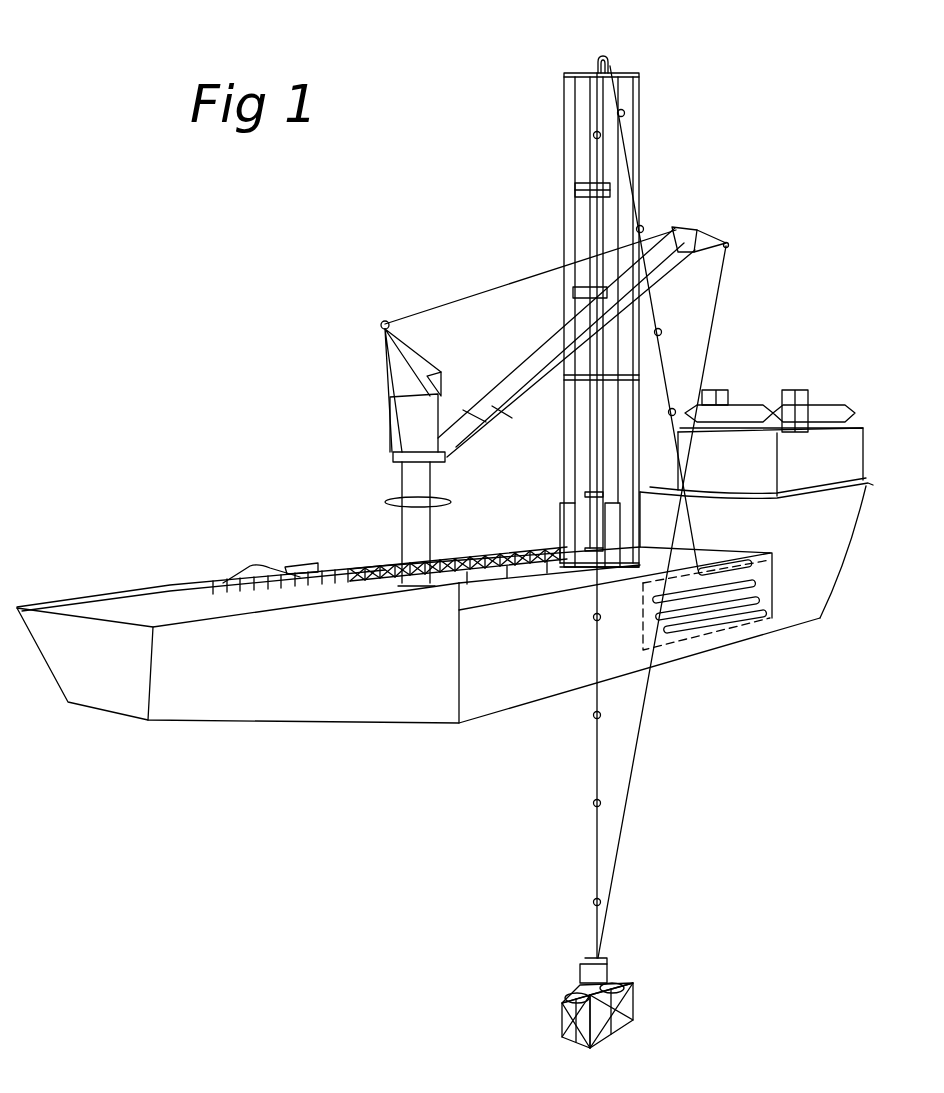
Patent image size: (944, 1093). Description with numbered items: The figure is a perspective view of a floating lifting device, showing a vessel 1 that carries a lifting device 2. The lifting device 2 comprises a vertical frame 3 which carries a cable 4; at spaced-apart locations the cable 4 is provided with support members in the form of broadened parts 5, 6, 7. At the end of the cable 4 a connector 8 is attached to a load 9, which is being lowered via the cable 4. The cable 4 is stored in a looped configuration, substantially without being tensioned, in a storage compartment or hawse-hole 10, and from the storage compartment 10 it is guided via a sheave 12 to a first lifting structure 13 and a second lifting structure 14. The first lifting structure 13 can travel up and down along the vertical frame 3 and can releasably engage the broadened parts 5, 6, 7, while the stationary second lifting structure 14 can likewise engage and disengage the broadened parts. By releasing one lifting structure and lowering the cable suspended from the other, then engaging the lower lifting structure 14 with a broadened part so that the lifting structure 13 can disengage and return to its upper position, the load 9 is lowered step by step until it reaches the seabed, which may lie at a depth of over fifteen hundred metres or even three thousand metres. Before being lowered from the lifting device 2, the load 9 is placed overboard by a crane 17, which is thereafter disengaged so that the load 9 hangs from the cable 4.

The vessel 1 is at (217, 553).
The lifting device 2 is at (726, 369).
The vertical frame 3 is at (564, 216).
The cable 4 is at (597, 760).
The broadened part 5 is at (597, 803).
The broadened part 6 is at (597, 716).
The broadened part 7 is at (597, 902).
The connector 8 is at (607, 973).
The load 9 is at (620, 1030).
The storage compartment 10 is at (706, 624).
The sheave 12 is at (609, 57).
The first lifting structure 13 is at (576, 188).
The second lifting structure 14 is at (574, 292).
The crane 17 is at (400, 430).